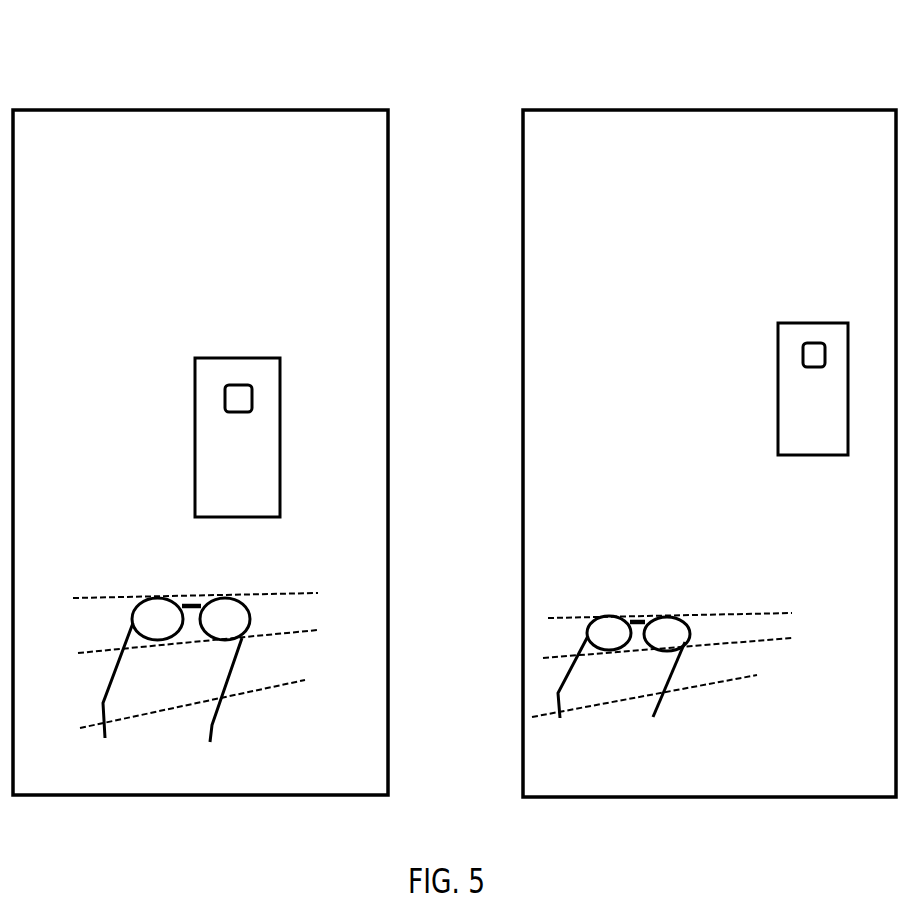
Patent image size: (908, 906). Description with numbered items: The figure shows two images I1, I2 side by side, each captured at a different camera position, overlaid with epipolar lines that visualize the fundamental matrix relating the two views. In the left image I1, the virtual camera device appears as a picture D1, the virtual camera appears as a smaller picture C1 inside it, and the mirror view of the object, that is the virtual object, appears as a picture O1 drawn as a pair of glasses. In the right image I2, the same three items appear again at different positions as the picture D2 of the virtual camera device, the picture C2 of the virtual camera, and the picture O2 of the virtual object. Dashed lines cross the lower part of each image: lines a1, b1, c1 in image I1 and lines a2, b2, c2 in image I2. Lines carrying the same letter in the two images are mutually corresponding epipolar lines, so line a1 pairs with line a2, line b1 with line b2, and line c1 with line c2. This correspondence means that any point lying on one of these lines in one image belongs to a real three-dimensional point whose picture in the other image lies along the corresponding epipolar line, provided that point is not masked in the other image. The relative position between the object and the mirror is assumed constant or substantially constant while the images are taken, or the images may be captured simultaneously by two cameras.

The first image I1 is at (260, 108).
The second image I2 is at (772, 107).
The picture of virtual camera device in first image D1 is at (280, 493).
The picture of virtual camera device in second image D2 is at (778, 438).
The picture of virtual camera in first image C1 is at (252, 398).
The picture of virtual camera in second image C2 is at (803, 355).
The picture of virtual object in first image O1 is at (214, 728).
The picture of virtual object in second image O2 is at (657, 707).
The epipolar line a in first image a1 is at (191, 580).
The epipolar line b in first image b1 is at (194, 638).
The epipolar line c in first image c1 is at (184, 704).
The epipolar line a in second image a2 is at (670, 604).
The epipolar line b in second image b2 is at (675, 655).
The epipolar line c in second image c2 is at (644, 696).